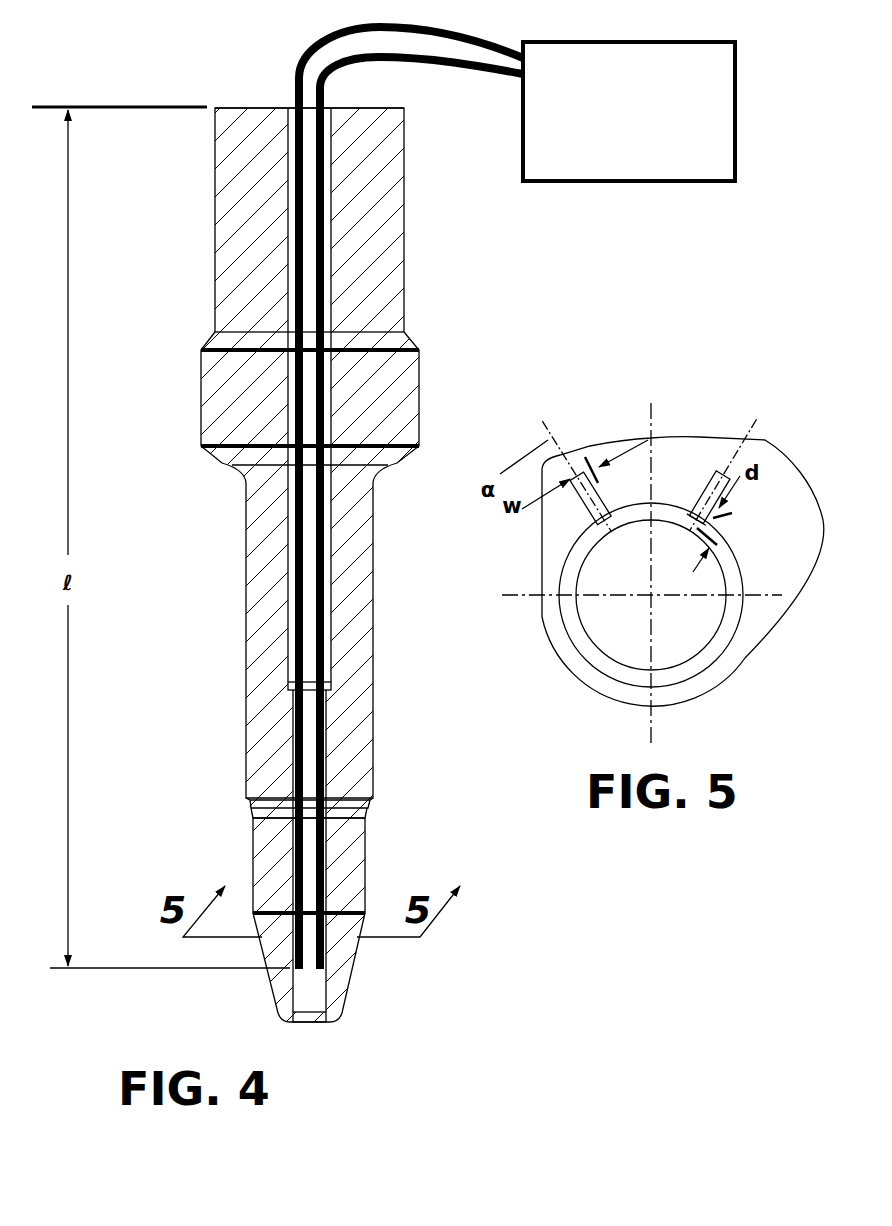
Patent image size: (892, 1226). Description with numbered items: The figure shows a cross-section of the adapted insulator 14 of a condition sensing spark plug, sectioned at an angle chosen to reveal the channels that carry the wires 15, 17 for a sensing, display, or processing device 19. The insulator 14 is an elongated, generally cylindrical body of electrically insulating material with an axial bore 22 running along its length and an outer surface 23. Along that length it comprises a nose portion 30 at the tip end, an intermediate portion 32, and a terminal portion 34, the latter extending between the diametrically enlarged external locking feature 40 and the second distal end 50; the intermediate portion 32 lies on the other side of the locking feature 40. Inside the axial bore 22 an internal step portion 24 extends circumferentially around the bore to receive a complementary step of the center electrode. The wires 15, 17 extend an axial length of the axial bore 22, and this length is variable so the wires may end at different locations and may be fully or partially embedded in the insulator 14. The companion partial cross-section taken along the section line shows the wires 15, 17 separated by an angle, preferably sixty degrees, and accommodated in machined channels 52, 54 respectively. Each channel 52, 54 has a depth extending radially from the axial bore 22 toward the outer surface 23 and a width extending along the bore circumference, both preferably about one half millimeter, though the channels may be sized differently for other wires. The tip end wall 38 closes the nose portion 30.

In FIG. 4, the insulator 14 is at (336, 544).
In FIG. 5, the insulator 14 is at (750, 635).
In FIG. 4, the wire 15 is at (317, 43).
In FIG. 5, the wire 15 is at (605, 512).
In FIG. 4, the wire 17 is at (474, 74).
In FIG. 5, the wire 17 is at (693, 503).
In FIG. 4, the sensing, display, or processing device 19 is at (629, 111).
In FIG. 4, the axial bore 22 is at (308, 615).
In FIG. 5, the axial bore 22 is at (590, 612).
In FIG. 4, the outer surface 23 is at (247, 737).
In FIG. 4, the internal step portion 24 is at (328, 688).
In FIG. 4, the nose portion 30 is at (349, 999).
In FIG. 4, the intermediate portion 32 is at (243, 545).
In FIG. 4, the terminal portion 34 is at (213, 178).
In FIG. 4, the tip end wall 38 is at (285, 1022).
In FIG. 4, the external locking feature 40 is at (418, 424).
In FIG. 4, the second distal end 50 is at (240, 106).
In FIG. 5, the channel 52 is at (610, 528).
In FIG. 5, the channel 54 is at (702, 518).